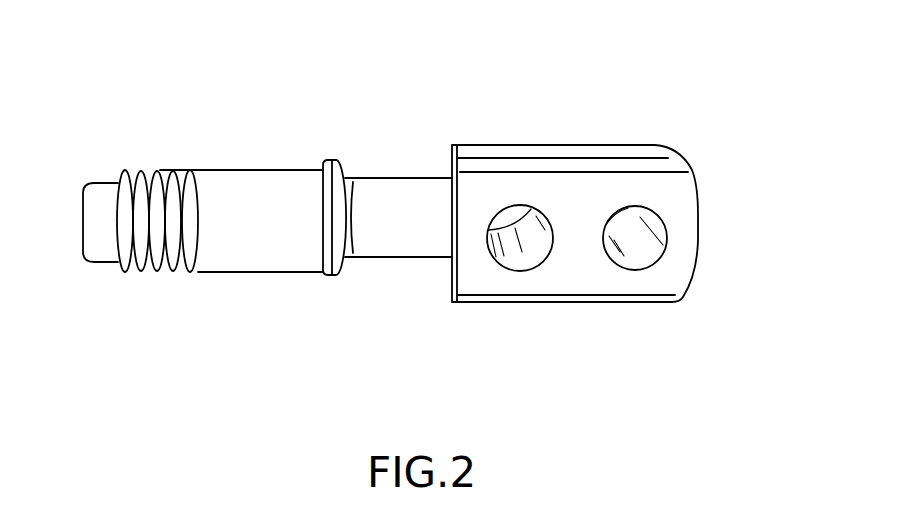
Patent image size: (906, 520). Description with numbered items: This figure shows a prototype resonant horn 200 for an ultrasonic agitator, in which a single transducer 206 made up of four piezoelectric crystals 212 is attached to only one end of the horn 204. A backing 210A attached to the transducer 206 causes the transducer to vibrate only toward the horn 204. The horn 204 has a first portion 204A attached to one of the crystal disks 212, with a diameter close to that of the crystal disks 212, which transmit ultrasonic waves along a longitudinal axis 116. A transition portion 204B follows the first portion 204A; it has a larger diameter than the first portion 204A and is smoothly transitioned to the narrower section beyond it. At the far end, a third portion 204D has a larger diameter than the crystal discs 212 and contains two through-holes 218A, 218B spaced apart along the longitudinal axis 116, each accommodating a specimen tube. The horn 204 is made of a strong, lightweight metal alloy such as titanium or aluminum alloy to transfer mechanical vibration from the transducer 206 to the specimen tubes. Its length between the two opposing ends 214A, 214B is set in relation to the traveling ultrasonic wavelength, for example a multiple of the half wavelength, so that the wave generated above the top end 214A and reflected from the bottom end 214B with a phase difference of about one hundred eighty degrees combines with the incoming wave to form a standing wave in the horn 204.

The connector assembly 200 is at (138, 67).
The backing 210A is at (105, 197).
The transducer 206 is at (133, 272).
The piezoelectric crystals 212 is at (163, 272).
The top end 214A is at (198, 272).
The first portion 204A is at (268, 272).
The transition portion 204B is at (343, 275).
The horn 204 is at (480, 322).
The third portion 204D is at (575, 280).
The through-hole 218A is at (523, 252).
The through-hole 218B is at (633, 252).
The bottom end 214B is at (698, 240).
The longitudinal axis 116 is at (782, 187).